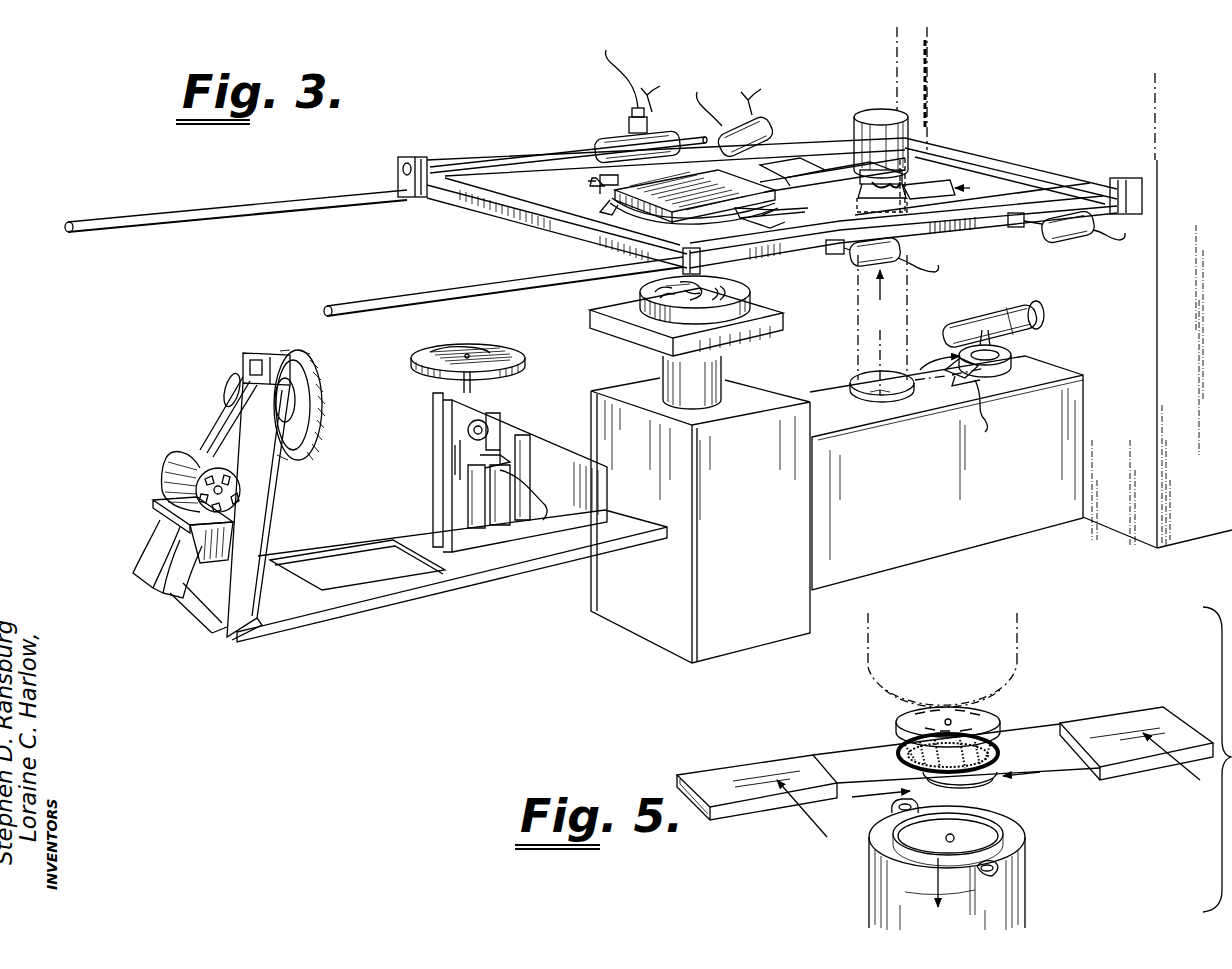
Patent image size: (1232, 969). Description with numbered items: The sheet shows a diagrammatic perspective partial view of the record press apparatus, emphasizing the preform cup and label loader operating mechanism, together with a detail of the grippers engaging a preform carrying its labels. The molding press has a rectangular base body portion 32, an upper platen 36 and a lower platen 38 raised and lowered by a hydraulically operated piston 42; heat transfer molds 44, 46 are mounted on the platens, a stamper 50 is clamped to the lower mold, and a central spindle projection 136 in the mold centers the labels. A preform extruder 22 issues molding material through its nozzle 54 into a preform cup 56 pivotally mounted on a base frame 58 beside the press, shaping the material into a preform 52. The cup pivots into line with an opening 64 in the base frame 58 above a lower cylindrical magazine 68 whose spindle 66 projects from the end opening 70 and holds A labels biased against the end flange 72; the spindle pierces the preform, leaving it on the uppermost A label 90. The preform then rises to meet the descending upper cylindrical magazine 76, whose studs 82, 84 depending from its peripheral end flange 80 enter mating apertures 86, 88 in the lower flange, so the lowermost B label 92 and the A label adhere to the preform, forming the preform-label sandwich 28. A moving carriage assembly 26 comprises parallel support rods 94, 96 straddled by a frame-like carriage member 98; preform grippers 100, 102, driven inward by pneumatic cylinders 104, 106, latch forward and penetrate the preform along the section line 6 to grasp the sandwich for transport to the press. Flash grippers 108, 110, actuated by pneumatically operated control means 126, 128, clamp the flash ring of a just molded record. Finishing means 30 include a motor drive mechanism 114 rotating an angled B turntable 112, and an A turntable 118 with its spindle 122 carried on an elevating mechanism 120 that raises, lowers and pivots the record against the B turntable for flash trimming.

In FIG. 5, the section line 6- 6 is at (990, 799).
In FIG. 3, the preform extruder 22 is at (950, 65).
In FIG. 3, the moving carriage assembly 26 is at (535, 232).
In FIG. 5, the preform-label sandwich 28 is at (1000, 719).
In FIG. 3, the finishing means 30 is at (197, 428).
In FIG. 3, the base body portion 32 is at (635, 604).
In FIG. 3, the upper platen 36 is at (640, 200).
In FIG. 3, the lower platen 38 is at (625, 330).
In FIG. 3, the hydraulically operated piston 42 is at (718, 380).
In FIG. 3, the upper heat transfer mold 44 is at (690, 216).
In FIG. 3, the lower heat transfer mold 46 is at (742, 298).
In FIG. 3, the lower stamper 50 is at (720, 283).
In FIG. 3, the preform 52 is at (993, 365).
In FIG. 5, the preform 52 is at (900, 748).
In FIG. 3, the extruder nozzle 54 is at (963, 325).
In FIG. 3, the preform cup 56 is at (1012, 352).
In FIG. 3, the base frame 58 is at (940, 535).
In FIG. 3, the base frame opening 64 is at (866, 392).
In FIG. 3, the spindle 66 is at (882, 393).
In FIG. 5, the spindle 66 is at (954, 837).
In FIG. 5, the lower cylindrical magazine 68 is at (1026, 892).
In FIG. 5, the end opening 70 is at (900, 841).
In FIG. 5, the end flange 72 is at (922, 858).
In FIG. 3, the upper cylindrical magazine 76 is at (872, 110).
In FIG. 5, the upper cylindrical magazine 76 is at (1020, 640).
In FIG. 3, the peripheral end flange 80 is at (907, 176).
In FIG. 5, the peripheral end flange 80 is at (1018, 676).
In FIG. 3, the stud 82 is at (870, 178).
In FIG. 3, the stud 84 is at (908, 180).
In FIG. 5, the mating aperture 86 is at (1025, 840).
In FIG. 5, the mating aperture 88 is at (893, 810).
In FIG. 5, the uppermost A label 90 is at (975, 783).
In FIG. 5, the lowermost B label 92 is at (900, 720).
In FIG. 3, the support rod 94 is at (455, 298).
In FIG. 3, the support rod 96 is at (245, 215).
In FIG. 3, the carriage member 98 is at (483, 185).
In FIG. 3, the preform gripper 100 is at (967, 202).
In FIG. 5, the preform gripper 100 is at (780, 765).
In FIG. 3, the preform gripper 102 is at (805, 170).
In FIG. 5, the preform gripper 102 is at (1117, 722).
In FIG. 3, the pneumatic cylinder 104 is at (1066, 232).
In FIG. 3, the pneumatic cylinder 106 is at (755, 130).
In FIG. 3, the flash gripper 108 is at (785, 216).
In FIG. 3, the flash gripper 110 is at (598, 188).
In FIG. 3, the B turntable 112 is at (320, 412).
In FIG. 3, the motor drive mechanism 114 is at (183, 466).
In FIG. 3, the A turntable 118 is at (490, 352).
In FIG. 3, the elevating mechanism 120 is at (520, 472).
In FIG. 3, the A turntable spindle 122 is at (433, 350).
In FIG. 3, the pneumatically operated control means 126 is at (893, 248).
In FIG. 3, the pneumatically operated control means 128 is at (577, 168).
In FIG. 3, the central spindle projection 136 is at (640, 292).